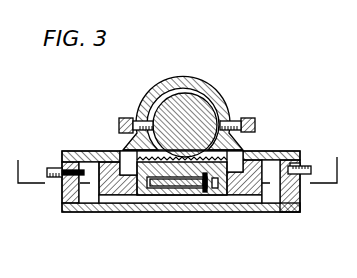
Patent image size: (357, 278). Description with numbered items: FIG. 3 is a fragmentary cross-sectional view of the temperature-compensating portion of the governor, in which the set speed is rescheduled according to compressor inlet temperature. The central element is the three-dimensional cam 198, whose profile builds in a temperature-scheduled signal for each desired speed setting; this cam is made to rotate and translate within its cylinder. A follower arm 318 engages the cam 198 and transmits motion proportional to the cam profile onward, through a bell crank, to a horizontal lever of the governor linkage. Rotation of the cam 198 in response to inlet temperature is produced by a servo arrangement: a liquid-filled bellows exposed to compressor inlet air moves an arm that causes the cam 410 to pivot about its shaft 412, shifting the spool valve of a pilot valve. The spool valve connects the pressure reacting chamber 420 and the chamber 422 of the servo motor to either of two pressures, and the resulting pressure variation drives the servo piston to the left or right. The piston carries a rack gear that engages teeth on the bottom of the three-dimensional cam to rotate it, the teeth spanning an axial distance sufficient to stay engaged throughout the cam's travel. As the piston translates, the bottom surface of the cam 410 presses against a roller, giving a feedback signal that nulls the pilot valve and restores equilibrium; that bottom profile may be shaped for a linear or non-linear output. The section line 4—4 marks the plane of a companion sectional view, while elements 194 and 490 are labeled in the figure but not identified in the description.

The three-dimensional cam 198 is at (218, 90).
The follower arm 318 is at (133, 117).
The right clamp bolt 194 is at (244, 117).
The dome base 490 is at (238, 146).
The pressure reacting chamber 420 is at (66, 213).
The cam 410 is at (183, 188).
The shaft 412 is at (197, 192).
The chamber 422 is at (272, 197).
The section line 4- 4 is at (177, 161).